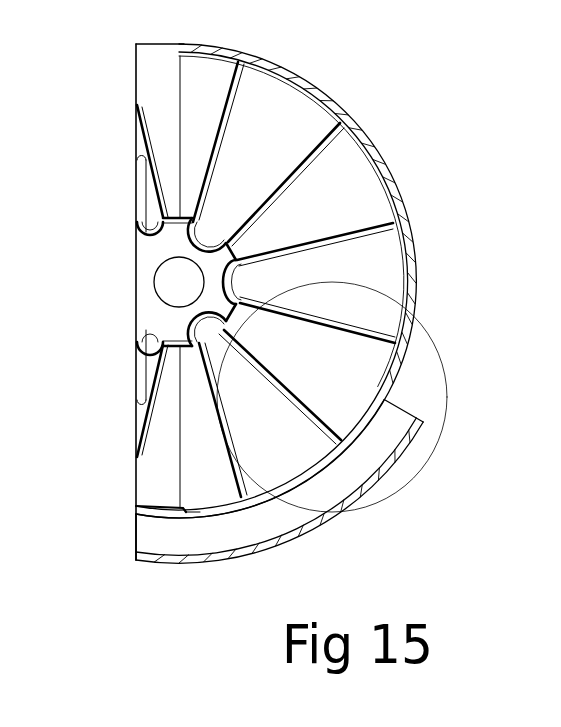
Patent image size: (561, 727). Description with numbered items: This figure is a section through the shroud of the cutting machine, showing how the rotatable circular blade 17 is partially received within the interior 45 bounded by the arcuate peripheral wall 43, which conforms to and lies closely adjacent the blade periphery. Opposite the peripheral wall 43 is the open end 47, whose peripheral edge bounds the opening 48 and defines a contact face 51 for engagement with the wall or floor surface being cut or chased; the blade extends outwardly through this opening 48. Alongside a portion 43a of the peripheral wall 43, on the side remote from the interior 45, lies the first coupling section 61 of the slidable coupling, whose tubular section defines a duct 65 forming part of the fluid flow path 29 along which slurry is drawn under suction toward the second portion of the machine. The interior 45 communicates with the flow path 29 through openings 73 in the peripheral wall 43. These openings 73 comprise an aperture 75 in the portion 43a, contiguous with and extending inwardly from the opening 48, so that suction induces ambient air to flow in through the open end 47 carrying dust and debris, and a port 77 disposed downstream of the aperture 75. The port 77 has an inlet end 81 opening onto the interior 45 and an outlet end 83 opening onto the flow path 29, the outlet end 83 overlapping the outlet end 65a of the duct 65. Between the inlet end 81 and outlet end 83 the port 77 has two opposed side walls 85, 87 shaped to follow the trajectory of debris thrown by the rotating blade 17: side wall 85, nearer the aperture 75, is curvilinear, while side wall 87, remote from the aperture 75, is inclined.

The open end 47 is at (135, 83).
The contact face 51 is at (136, 133).
The interior 45 is at (283, 130).
The peripheral wall 43 is at (407, 230).
The inlet end 81 is at (398, 410).
The side wall 87 is at (393, 383).
The outlet end 65a is at (393, 405).
The port 77 is at (383, 408).
The outlet end 83 is at (400, 420).
The fluid flow path 29 is at (383, 442).
The first coupling section 61 is at (395, 455).
The side wall 85 is at (350, 458).
The circular blade 17 is at (332, 416).
The duct 65 is at (285, 518).
The portion of the peripheral wall 43a is at (263, 503).
The openings 73 is at (153, 513).
The aperture 75 is at (187, 515).
The opening 48 is at (136, 482).